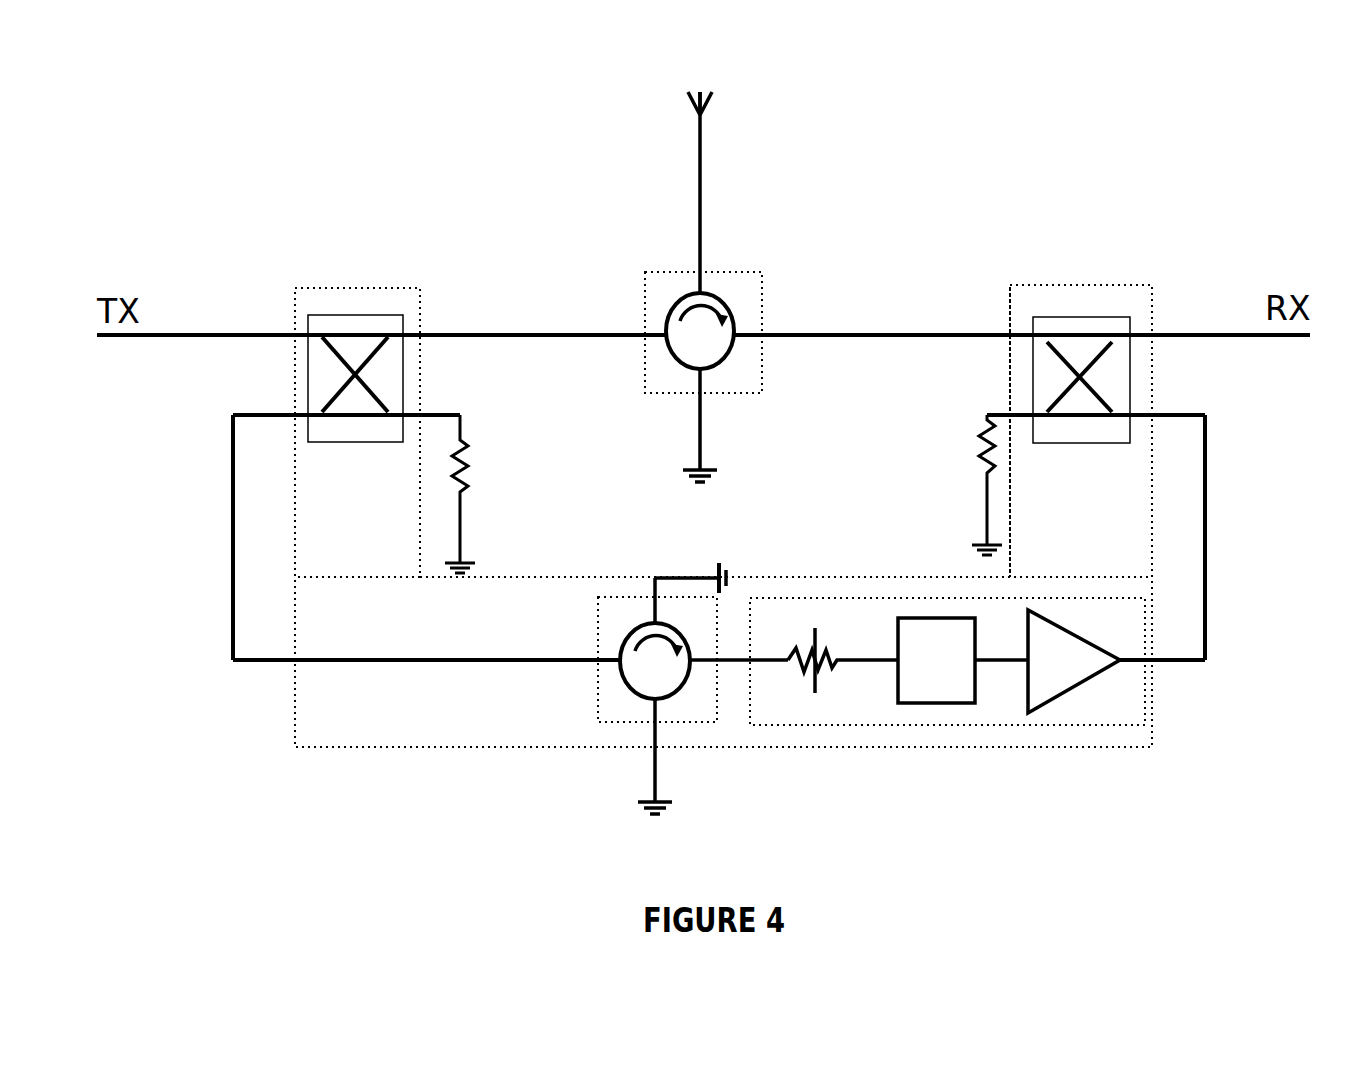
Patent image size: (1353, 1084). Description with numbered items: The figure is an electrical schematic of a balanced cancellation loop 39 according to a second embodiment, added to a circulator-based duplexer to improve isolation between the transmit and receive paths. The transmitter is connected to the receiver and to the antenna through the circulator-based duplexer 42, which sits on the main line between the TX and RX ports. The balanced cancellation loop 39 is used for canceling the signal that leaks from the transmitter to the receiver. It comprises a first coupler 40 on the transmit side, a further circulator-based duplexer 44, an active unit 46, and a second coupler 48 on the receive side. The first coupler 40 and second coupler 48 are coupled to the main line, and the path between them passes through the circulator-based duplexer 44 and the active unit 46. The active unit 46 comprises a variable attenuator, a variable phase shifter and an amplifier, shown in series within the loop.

The balanced cancellation loop 39 is at (705, 747).
The first coupler 40 is at (418, 247).
The circulator-based duplexer 42 is at (762, 272).
The circulator-based duplexer 44 is at (605, 597).
The active unit 46 is at (948, 725).
The second coupler 48 is at (1080, 315).